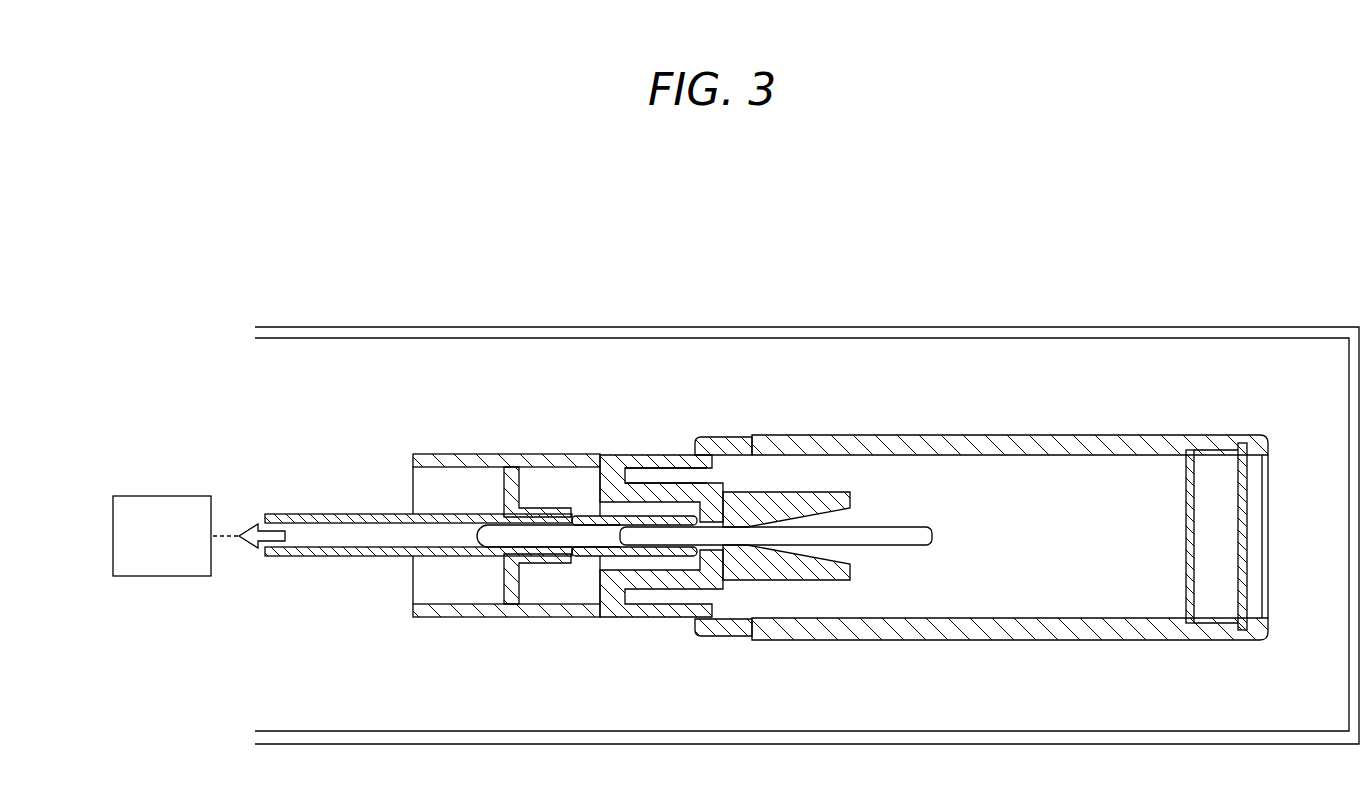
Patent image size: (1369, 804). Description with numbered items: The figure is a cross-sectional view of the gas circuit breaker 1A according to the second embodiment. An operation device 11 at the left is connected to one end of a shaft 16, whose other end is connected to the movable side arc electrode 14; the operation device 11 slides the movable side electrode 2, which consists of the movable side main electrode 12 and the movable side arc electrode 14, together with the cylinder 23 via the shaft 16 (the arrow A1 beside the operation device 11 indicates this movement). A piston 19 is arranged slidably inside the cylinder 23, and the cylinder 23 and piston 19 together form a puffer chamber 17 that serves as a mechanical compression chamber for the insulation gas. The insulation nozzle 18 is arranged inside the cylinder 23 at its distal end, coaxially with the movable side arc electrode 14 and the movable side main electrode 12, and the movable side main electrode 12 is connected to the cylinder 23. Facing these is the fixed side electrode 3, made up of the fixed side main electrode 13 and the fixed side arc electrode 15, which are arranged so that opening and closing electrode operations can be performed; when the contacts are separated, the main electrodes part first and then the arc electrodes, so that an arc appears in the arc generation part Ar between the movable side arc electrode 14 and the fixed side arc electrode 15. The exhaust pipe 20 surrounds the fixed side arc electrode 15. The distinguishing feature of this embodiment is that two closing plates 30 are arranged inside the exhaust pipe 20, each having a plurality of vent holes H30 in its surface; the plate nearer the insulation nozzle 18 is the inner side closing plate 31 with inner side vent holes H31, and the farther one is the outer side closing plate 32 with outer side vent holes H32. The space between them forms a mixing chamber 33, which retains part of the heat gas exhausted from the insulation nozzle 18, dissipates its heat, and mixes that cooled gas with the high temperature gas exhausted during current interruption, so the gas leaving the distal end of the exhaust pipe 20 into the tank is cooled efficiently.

The gas circuit breaker 1A is at (240, 200).
The operation device 11 is at (162, 577).
The light emission direction A1 is at (248, 522).
The piston 19 is at (500, 557).
The shaft 16 is at (498, 540).
The puffer chamber 17 is at (557, 457).
The movable side electrode 2 is at (647, 593).
The movable side main electrode 12 is at (680, 604).
The movable side arc electrode 14 is at (630, 550).
The cylinder 23 is at (650, 455).
The insulation nozzle 18 is at (790, 567).
The arc generation part Ar is at (737, 578).
The fixed side electrode 3 is at (776, 489).
The fixed side main electrode 13 is at (718, 450).
The fixed side arc electrode 15 is at (887, 537).
The exhaust pipe 20 is at (990, 447).
The closing plate 30 is at (1237, 587).
The inner side closing plate 31 is at (1185, 598).
The outer side closing plate 32 is at (1247, 583).
The mixing chamber 33 is at (1218, 535).
The vent hole H30 is at (1214, 425).
The inner side vent hole H31 is at (1180, 507).
The outer side vent hole H32 is at (1283, 430).